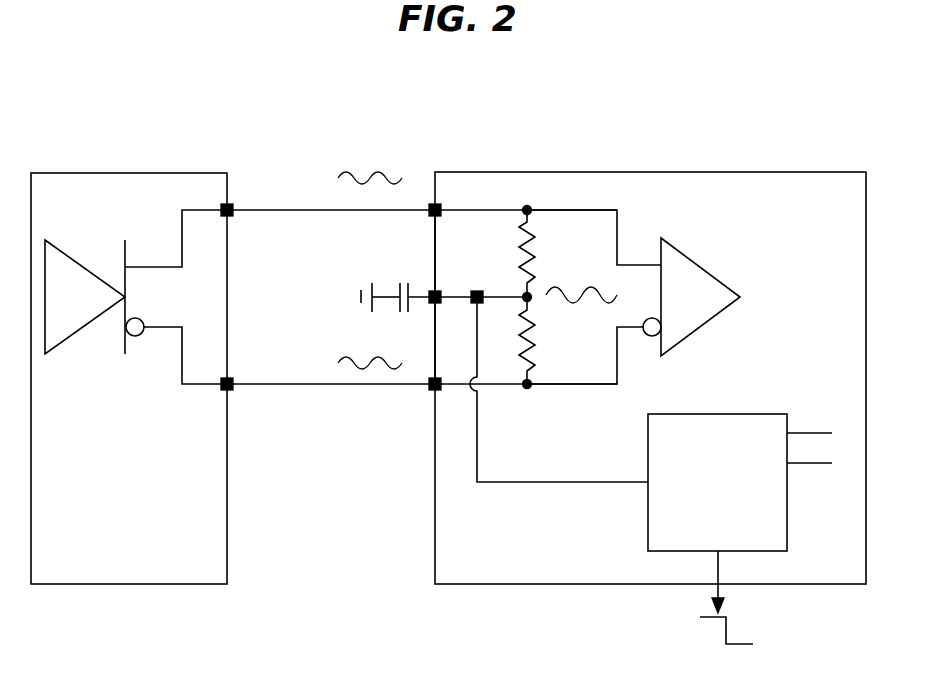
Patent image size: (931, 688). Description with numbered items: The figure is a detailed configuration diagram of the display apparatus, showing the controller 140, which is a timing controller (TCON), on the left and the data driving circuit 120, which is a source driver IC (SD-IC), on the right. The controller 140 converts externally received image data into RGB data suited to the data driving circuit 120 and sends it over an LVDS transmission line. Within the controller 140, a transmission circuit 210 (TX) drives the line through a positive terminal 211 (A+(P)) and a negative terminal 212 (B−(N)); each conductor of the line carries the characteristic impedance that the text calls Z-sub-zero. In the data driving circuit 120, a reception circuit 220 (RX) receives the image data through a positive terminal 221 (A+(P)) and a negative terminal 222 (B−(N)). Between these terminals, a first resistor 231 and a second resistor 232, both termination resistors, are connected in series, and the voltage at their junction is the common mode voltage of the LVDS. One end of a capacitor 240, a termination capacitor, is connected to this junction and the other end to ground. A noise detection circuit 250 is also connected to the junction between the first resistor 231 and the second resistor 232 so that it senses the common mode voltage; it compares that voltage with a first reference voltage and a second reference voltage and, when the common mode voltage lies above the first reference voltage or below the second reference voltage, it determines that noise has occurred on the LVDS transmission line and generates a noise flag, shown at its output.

The data driving circuit 120 is at (795, 172).
The controller 140 is at (211, 173).
The transmission circuit 210 is at (70, 254).
The positive terminal 211 is at (233, 204).
The negative terminal 212 is at (233, 378).
The reception circuit 220 is at (693, 256).
The positive terminal 221 is at (531, 208).
The negative terminal 222 is at (531, 386).
The first resistor 231 is at (538, 242).
The second resistor 232 is at (538, 347).
The capacitor 240 is at (397, 283).
The noise detection circuit 250 is at (746, 414).